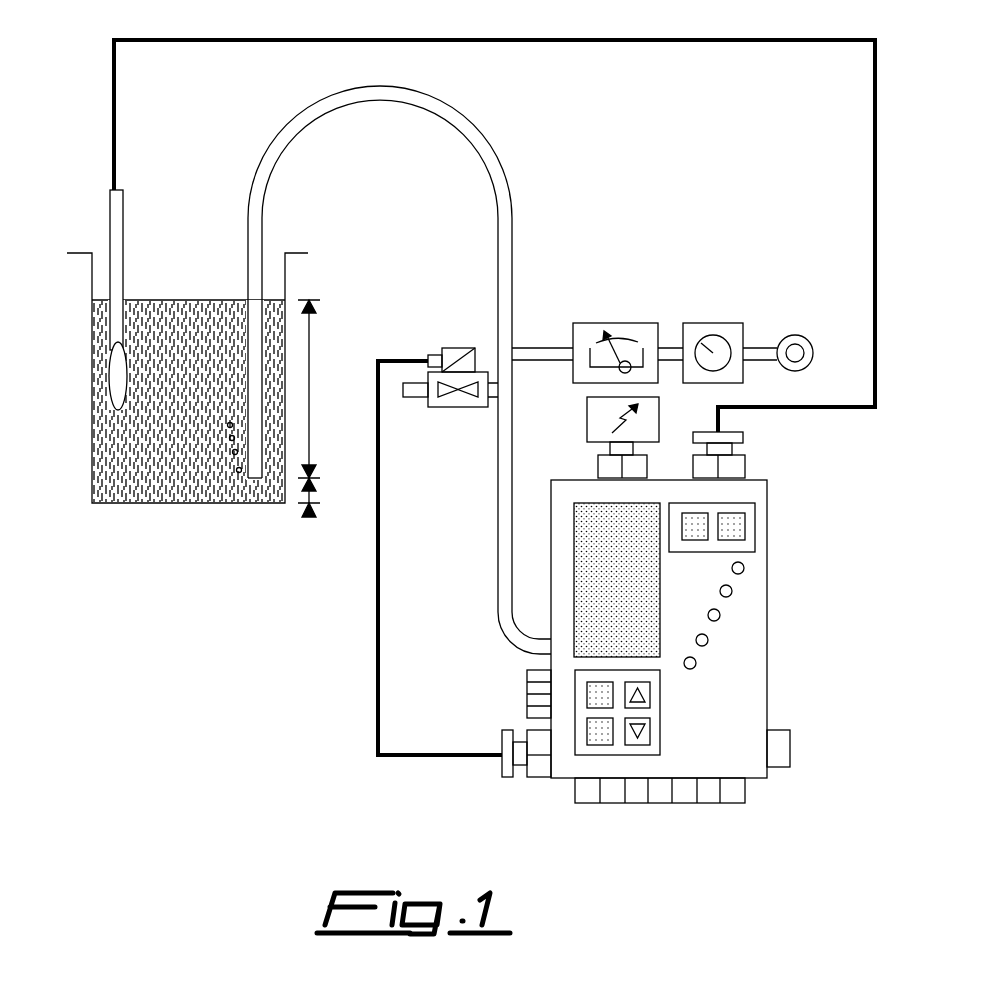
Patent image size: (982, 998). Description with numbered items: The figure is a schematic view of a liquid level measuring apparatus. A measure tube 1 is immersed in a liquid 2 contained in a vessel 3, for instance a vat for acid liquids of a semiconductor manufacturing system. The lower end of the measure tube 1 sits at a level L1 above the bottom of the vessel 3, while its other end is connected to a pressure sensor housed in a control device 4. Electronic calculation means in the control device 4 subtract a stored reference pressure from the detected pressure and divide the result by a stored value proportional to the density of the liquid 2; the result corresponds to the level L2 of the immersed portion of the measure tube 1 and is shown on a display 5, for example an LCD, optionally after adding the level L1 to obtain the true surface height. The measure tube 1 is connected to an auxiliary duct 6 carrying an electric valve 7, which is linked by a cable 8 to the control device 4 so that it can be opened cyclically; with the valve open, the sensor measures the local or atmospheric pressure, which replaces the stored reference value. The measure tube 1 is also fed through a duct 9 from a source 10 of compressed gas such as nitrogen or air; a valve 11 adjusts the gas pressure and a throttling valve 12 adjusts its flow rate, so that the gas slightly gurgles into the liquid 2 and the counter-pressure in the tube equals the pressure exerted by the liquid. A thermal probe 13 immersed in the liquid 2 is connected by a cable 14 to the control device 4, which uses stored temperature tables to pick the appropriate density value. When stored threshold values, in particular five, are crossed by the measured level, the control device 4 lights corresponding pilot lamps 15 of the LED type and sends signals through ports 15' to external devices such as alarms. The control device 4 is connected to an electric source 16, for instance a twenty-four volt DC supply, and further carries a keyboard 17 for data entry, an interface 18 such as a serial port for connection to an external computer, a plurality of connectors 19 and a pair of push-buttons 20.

The measure tube 1 is at (248, 280).
The liquid 2 is at (180, 480).
The vessel 3 is at (92, 283).
The control device 4 is at (755, 682).
The display 5 is at (590, 517).
The auxiliary duct 6 is at (413, 388).
The electric valve 7 is at (455, 360).
The cable 8 is at (378, 655).
The duct 9 is at (750, 355).
The source of compressed gasses 10 is at (808, 345).
The valve 11 is at (690, 327).
The throttling valve 12 is at (590, 330).
The thermal probe 13 is at (118, 385).
The cable 14 is at (114, 125).
The pilot lamps 15 is at (747, 615).
The ports 15' is at (513, 678).
The power indicator 16 is at (598, 430).
The keyboard 17 is at (578, 748).
The interface 18 is at (778, 748).
The connectors 19 is at (615, 795).
The push-buttons 20 is at (750, 530).
The level L1 is at (329, 497).
The level L2 is at (324, 389).